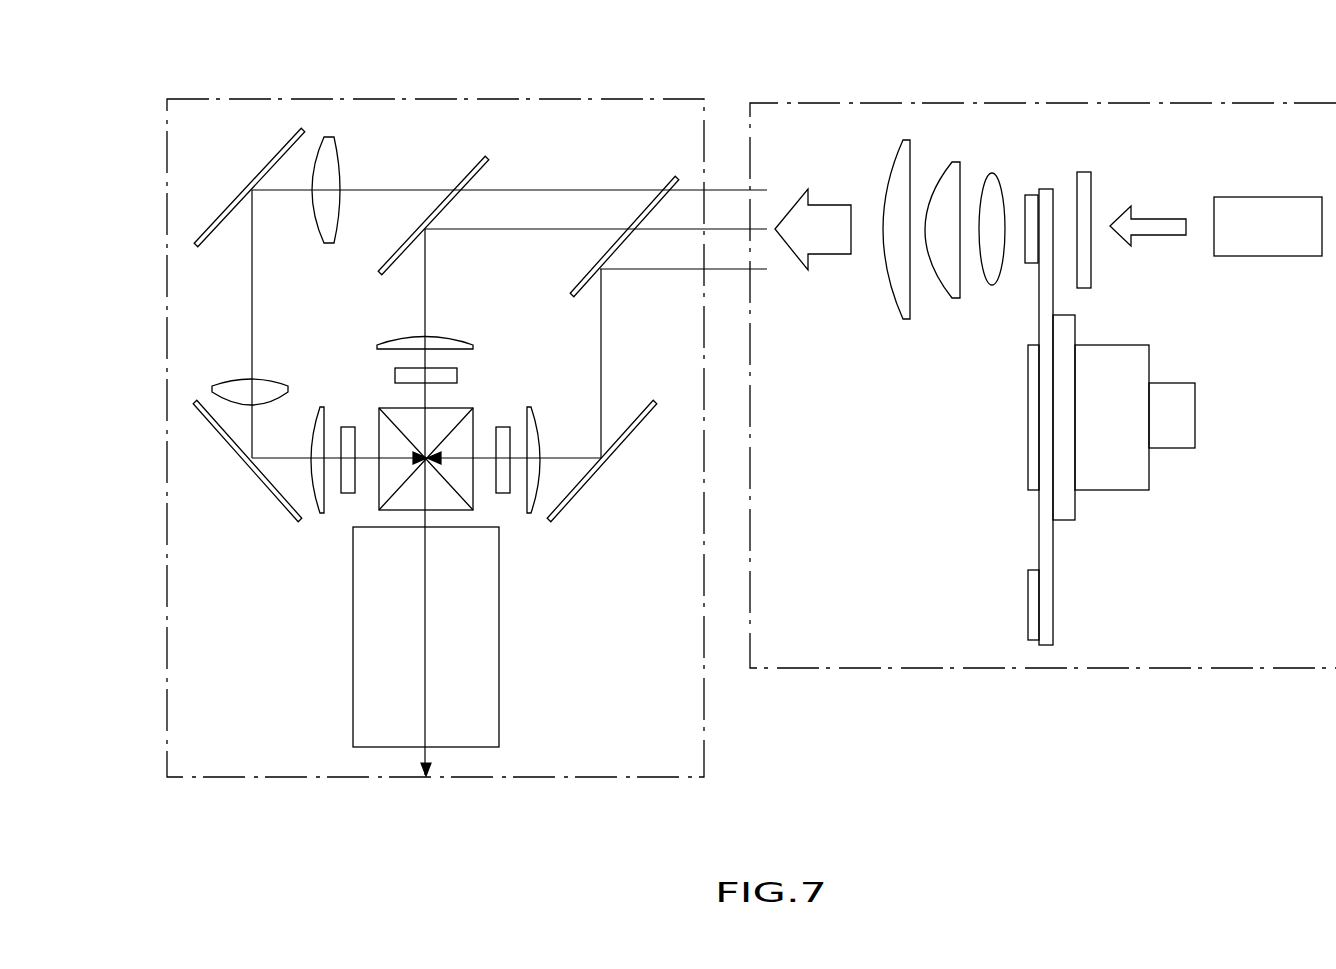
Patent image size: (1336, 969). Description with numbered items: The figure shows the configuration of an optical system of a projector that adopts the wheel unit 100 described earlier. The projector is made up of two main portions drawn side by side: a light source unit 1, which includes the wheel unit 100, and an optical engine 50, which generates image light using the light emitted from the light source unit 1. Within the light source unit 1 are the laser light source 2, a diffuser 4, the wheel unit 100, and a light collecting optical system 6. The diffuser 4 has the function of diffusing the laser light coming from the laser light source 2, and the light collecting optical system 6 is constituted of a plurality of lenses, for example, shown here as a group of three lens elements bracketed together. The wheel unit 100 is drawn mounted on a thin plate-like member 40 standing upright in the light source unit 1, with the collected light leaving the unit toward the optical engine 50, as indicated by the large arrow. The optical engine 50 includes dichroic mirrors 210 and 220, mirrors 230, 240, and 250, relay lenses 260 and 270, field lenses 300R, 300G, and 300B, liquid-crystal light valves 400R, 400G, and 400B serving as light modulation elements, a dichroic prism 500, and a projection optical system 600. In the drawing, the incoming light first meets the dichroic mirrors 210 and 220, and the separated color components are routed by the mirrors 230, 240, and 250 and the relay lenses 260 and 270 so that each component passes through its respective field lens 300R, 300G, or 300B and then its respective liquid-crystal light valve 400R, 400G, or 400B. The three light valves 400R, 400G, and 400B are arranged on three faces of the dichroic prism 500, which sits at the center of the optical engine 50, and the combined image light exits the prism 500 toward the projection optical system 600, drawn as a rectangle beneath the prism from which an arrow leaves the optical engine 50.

The light source unit 1 is at (1065, 92).
The laser light source 2 is at (1267, 256).
The diffuser 4 is at (1091, 190).
The light collecting optical system 6 is at (873, 317).
The substrate 40 is at (1066, 615).
The optical engine 50 is at (392, 92).
The wheel unit 100 is at (1144, 525).
The dichroic mirror 210 is at (670, 178).
The dichroic mirror 220 is at (473, 168).
The mirror 230 is at (623, 440).
The mirror 240 is at (267, 165).
The mirror 250 is at (227, 442).
The relay lens 260 is at (340, 167).
The relay lens 270 is at (232, 378).
The field lens 300R is at (540, 442).
The field lens 300G is at (445, 335).
The field lens 300B is at (320, 407).
The liquid-crystal light valve 400R is at (505, 495).
The liquid-crystal light valve 400G is at (457, 378).
The liquid-crystal light valve 400B is at (348, 495).
The dichroic prism 500 is at (388, 407).
The projection optical system 600 is at (499, 665).